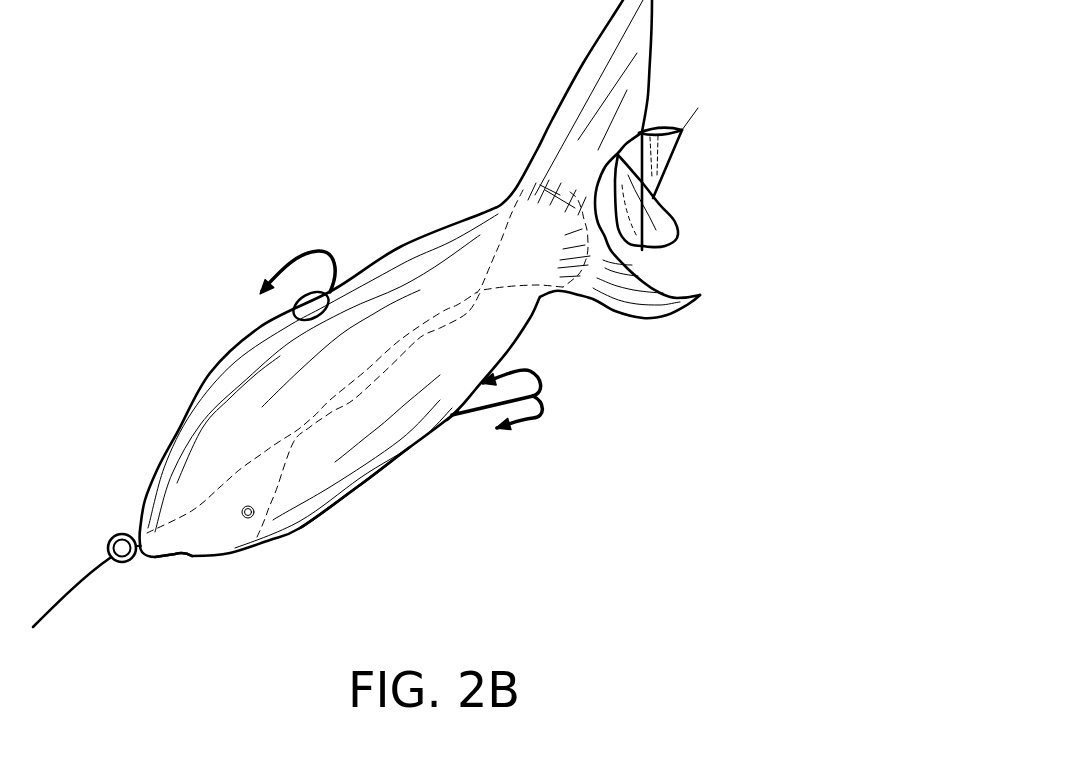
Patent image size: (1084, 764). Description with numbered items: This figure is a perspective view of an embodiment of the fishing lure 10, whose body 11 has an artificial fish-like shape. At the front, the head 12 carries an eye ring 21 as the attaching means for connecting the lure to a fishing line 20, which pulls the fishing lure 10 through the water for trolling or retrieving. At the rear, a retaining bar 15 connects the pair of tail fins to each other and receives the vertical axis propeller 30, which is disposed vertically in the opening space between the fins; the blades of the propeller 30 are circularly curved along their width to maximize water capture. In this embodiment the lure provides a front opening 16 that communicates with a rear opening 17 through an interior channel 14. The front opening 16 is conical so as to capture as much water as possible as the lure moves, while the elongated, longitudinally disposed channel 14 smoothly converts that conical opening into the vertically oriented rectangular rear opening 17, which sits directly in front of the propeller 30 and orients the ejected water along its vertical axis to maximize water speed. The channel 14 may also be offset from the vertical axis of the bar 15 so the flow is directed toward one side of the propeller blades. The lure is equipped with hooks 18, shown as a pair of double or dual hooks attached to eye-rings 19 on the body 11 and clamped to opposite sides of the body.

The fishing lure 10 is at (136, 222).
The body of the fishing lure 11 is at (407, 460).
The head 12 is at (213, 377).
The interior channel 14 is at (530, 290).
The retaining bar 15 is at (643, 103).
The front opening 16 is at (168, 553).
The rear opening 17 is at (570, 192).
The hooks 18 is at (300, 253).
The eye-rings 19 is at (448, 418).
The fishing line 20 is at (84, 580).
The eye ring 21 is at (120, 536).
The vertical axis propeller 30 is at (725, 179).